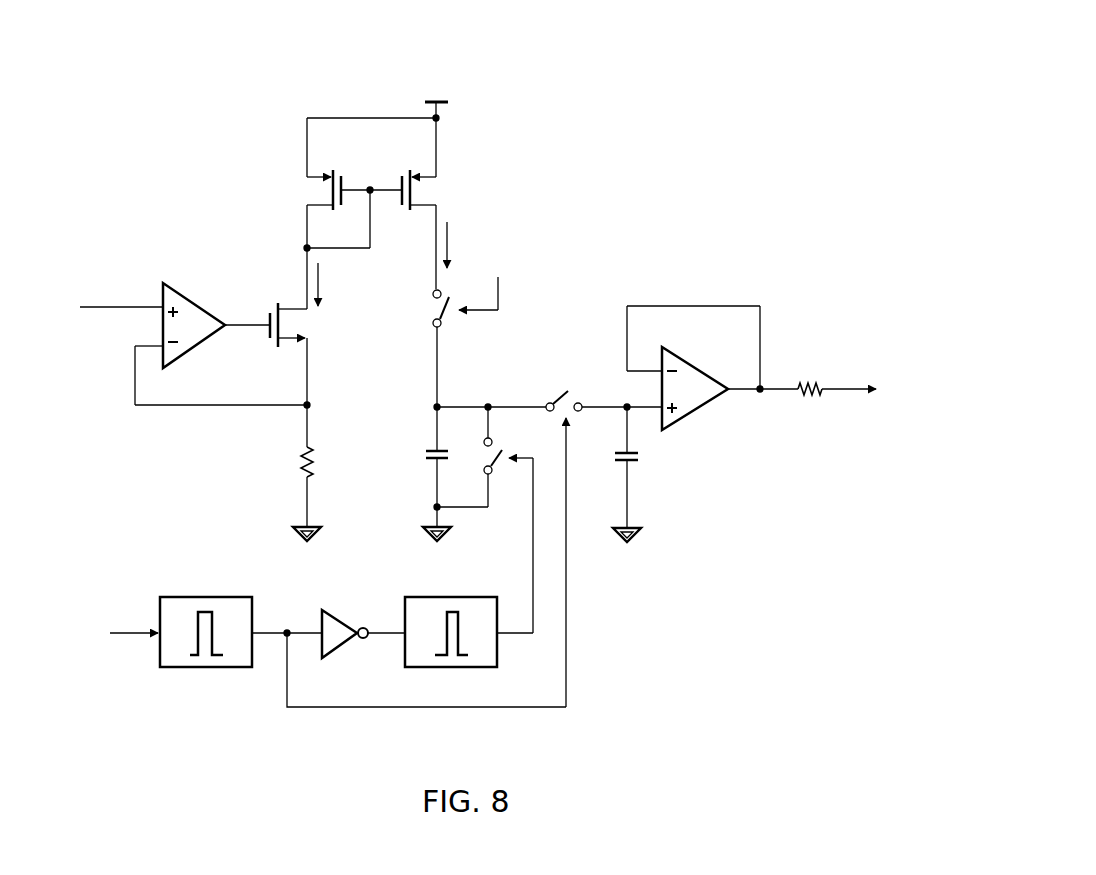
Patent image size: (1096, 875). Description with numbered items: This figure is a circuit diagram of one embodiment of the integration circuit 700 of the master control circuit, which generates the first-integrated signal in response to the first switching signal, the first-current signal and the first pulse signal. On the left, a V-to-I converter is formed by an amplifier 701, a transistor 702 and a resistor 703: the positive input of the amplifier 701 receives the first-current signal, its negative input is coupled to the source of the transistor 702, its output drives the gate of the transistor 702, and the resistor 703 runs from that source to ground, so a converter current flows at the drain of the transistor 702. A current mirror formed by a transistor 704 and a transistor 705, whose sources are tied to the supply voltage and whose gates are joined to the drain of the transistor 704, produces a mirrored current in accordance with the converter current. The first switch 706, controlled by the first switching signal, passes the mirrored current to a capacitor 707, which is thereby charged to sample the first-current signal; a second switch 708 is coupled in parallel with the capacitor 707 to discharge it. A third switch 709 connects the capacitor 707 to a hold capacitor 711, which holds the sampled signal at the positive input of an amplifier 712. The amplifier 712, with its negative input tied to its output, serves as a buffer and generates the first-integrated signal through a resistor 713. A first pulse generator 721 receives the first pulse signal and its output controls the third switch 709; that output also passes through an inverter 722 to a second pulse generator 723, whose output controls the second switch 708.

The integration circuit 700 is at (882, 30).
The amplifier 701 is at (177, 343).
The transistor 702 is at (314, 347).
The resistor 703 is at (289, 494).
The transistor 704 is at (332, 184).
The transistor 705 is at (445, 203).
The first switch 706 is at (448, 327).
The capacitor 707 is at (417, 474).
The second switch 708 is at (489, 520).
The third switch 709 is at (565, 535).
The hold capacitor 711 is at (646, 474).
The amplifier 712 is at (712, 368).
The resistor 713 is at (853, 402).
The first pulse generator 721 is at (183, 617).
The inverter 722 is at (363, 625).
The second pulse generator 723 is at (469, 617).